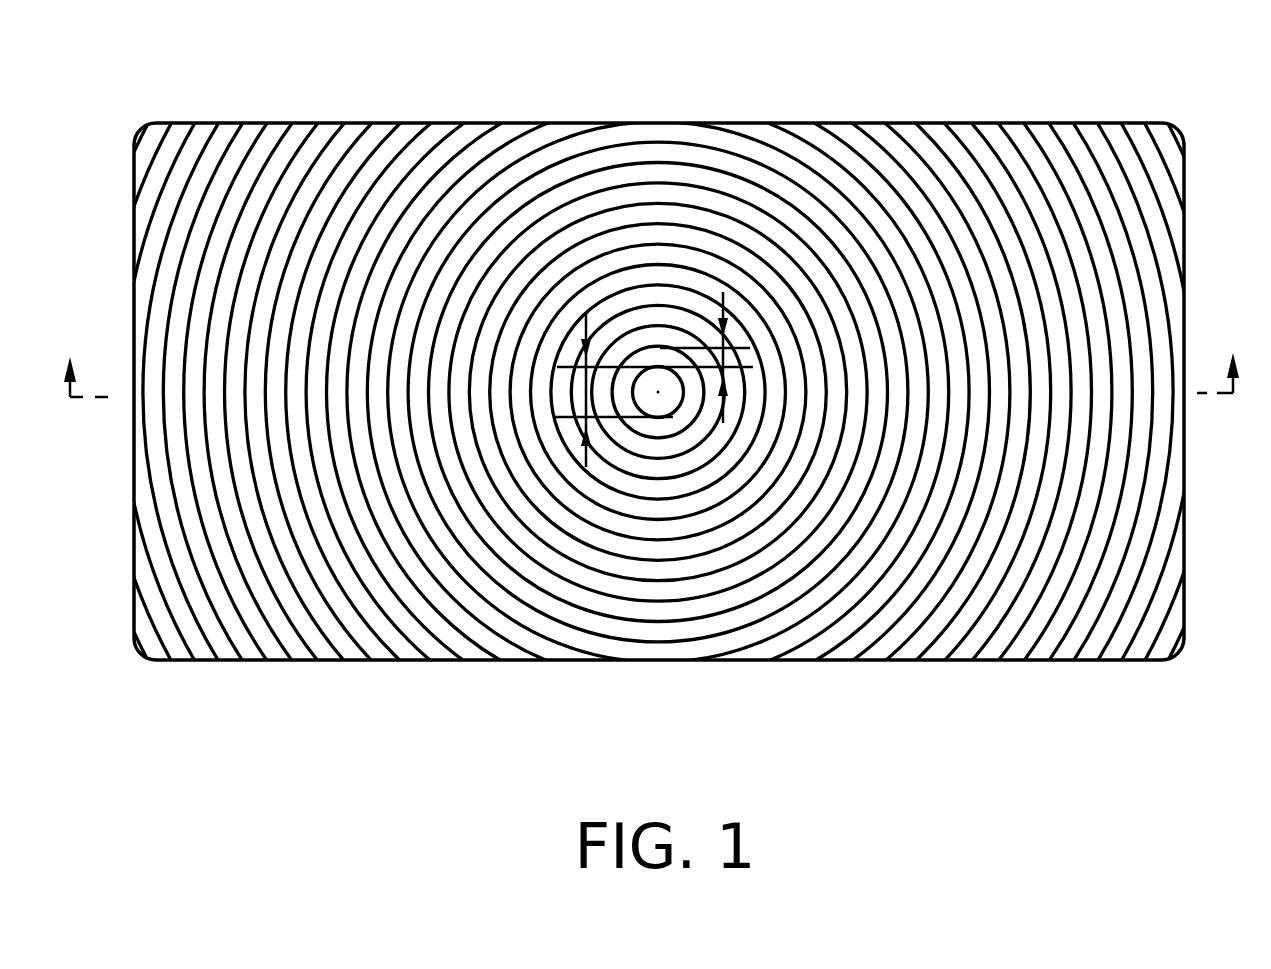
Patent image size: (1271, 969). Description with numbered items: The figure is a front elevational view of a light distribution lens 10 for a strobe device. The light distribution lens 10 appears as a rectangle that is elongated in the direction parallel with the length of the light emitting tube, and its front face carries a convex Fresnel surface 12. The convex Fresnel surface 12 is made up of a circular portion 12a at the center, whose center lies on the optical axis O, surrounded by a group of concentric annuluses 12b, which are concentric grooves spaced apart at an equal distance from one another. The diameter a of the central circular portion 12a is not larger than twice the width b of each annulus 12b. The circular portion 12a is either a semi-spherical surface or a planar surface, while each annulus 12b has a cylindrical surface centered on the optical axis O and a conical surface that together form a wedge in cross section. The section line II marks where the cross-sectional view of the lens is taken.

The light distribution lens 10 is at (1132, 108).
The convex Fresnel surface 12 is at (1005, 602).
The circular portion 12a is at (672, 395).
The concentric annuluses 12b is at (872, 498).
The optical axis O is at (658, 397).
The diameter of the central circular portion a is at (585, 393).
The width of each annulus b is at (725, 358).
The section line II- II is at (651, 348).